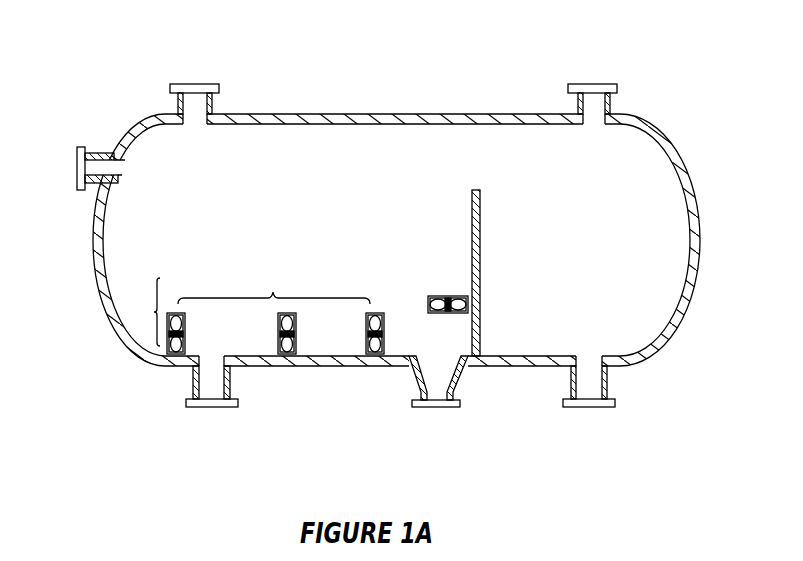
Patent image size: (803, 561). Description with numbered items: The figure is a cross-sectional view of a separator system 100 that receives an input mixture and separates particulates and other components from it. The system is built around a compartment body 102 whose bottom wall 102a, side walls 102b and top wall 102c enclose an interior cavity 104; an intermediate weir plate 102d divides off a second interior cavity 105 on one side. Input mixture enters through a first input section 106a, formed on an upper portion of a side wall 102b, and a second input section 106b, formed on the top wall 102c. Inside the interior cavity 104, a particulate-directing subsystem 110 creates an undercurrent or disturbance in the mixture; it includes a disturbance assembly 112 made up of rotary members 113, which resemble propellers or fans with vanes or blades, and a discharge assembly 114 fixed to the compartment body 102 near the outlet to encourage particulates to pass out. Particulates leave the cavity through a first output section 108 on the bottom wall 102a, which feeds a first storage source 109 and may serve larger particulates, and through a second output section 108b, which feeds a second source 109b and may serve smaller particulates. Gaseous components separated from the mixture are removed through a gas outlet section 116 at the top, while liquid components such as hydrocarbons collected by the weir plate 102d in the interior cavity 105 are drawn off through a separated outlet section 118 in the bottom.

The separator system 100 is at (658, 46).
The compartment body 102 is at (97, 238).
The bottom wall 102a is at (260, 360).
The side wall 102b is at (108, 298).
The top wall 102c is at (340, 122).
The weir plate 102d is at (481, 190).
The interior cavity 104 is at (300, 205).
The interior cavity 105 is at (600, 246).
The first input section 106a is at (197, 82).
The second input section 106b is at (66, 158).
The first output section 108 is at (453, 386).
The second output section 108b is at (192, 383).
The first storage source 109 is at (445, 433).
The second source 109b is at (228, 436).
The particulate-directing subsystem 110 is at (145, 312).
The disturbance assembly 112 is at (258, 351).
The rotary member 113 is at (170, 358).
The discharge assembly 114 is at (425, 302).
The gas outlet section 116 is at (592, 83).
The separated outlet section 118 is at (590, 352).